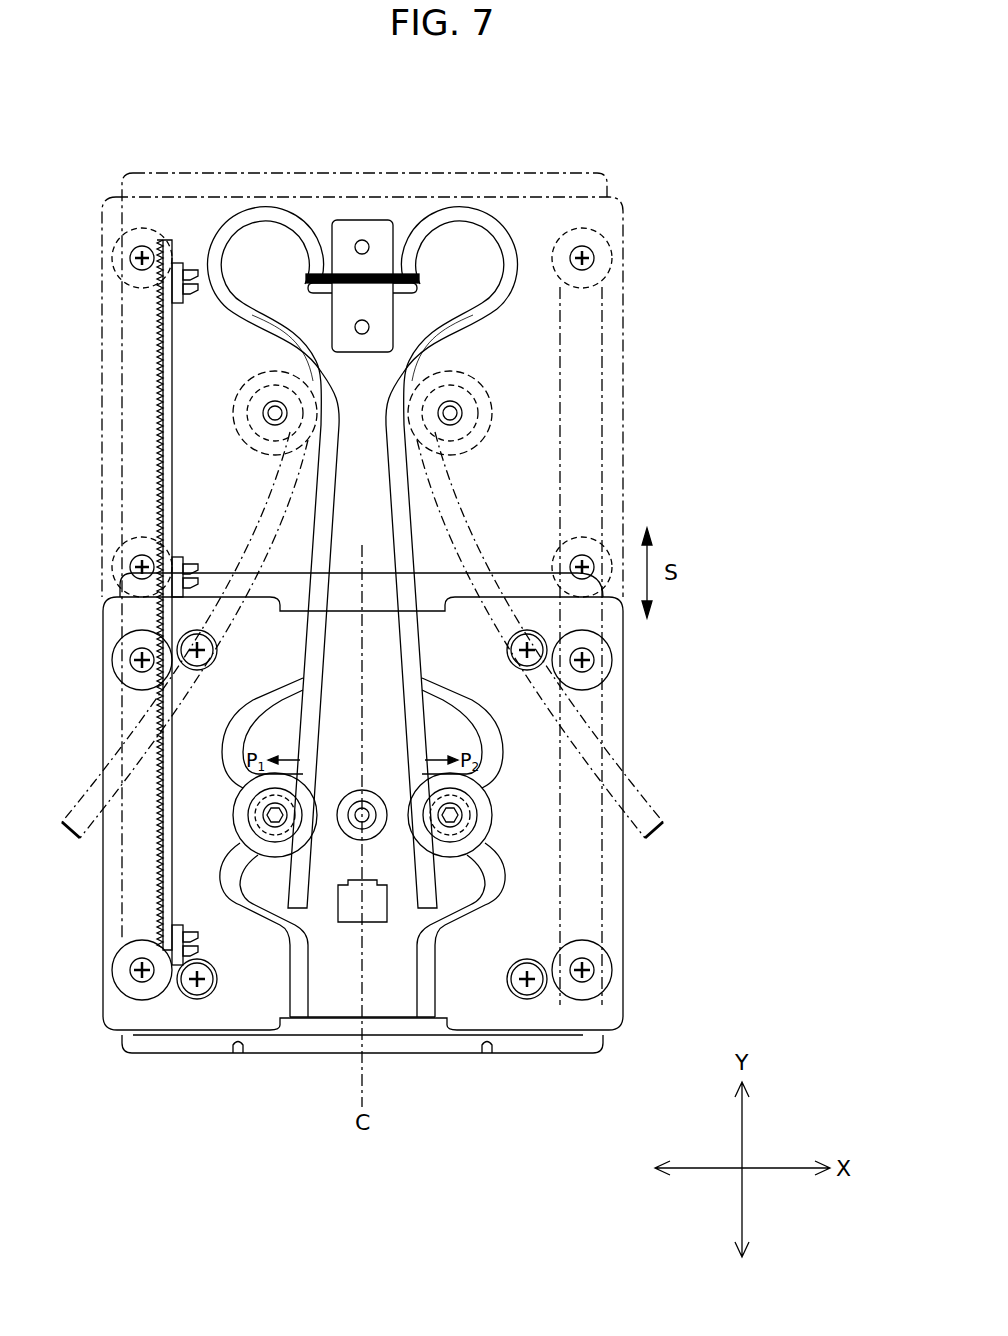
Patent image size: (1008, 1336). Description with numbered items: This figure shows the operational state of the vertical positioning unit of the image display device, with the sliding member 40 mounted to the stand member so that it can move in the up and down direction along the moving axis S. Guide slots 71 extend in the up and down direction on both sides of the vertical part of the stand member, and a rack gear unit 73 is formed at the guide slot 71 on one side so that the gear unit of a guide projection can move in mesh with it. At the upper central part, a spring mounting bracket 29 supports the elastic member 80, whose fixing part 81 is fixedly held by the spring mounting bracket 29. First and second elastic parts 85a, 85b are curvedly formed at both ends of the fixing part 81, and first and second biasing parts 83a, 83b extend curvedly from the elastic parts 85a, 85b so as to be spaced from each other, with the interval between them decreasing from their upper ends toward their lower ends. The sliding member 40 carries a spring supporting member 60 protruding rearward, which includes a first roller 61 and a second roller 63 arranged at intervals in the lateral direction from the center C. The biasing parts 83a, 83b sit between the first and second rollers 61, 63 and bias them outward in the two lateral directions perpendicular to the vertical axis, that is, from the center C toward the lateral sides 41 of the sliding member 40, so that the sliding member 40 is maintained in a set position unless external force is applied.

The spring mounting bracket 29 is at (370, 222).
The sliding member 40 is at (615, 718).
The lateral sides 41 is at (103, 657).
The spring supporting member 60 is at (277, 873).
The first roller 61 is at (488, 820).
The second roller 63 is at (238, 822).
The guide slots 71 is at (128, 458).
The rack gear unit 73 is at (155, 363).
The elastic member 80 is at (364, 510).
The fixing part 81 is at (419, 285).
The first biasing part 83a is at (402, 522).
The second biasing part 83b is at (320, 523).
The first elastic part 85a is at (507, 228).
The second elastic part 85b is at (218, 228).